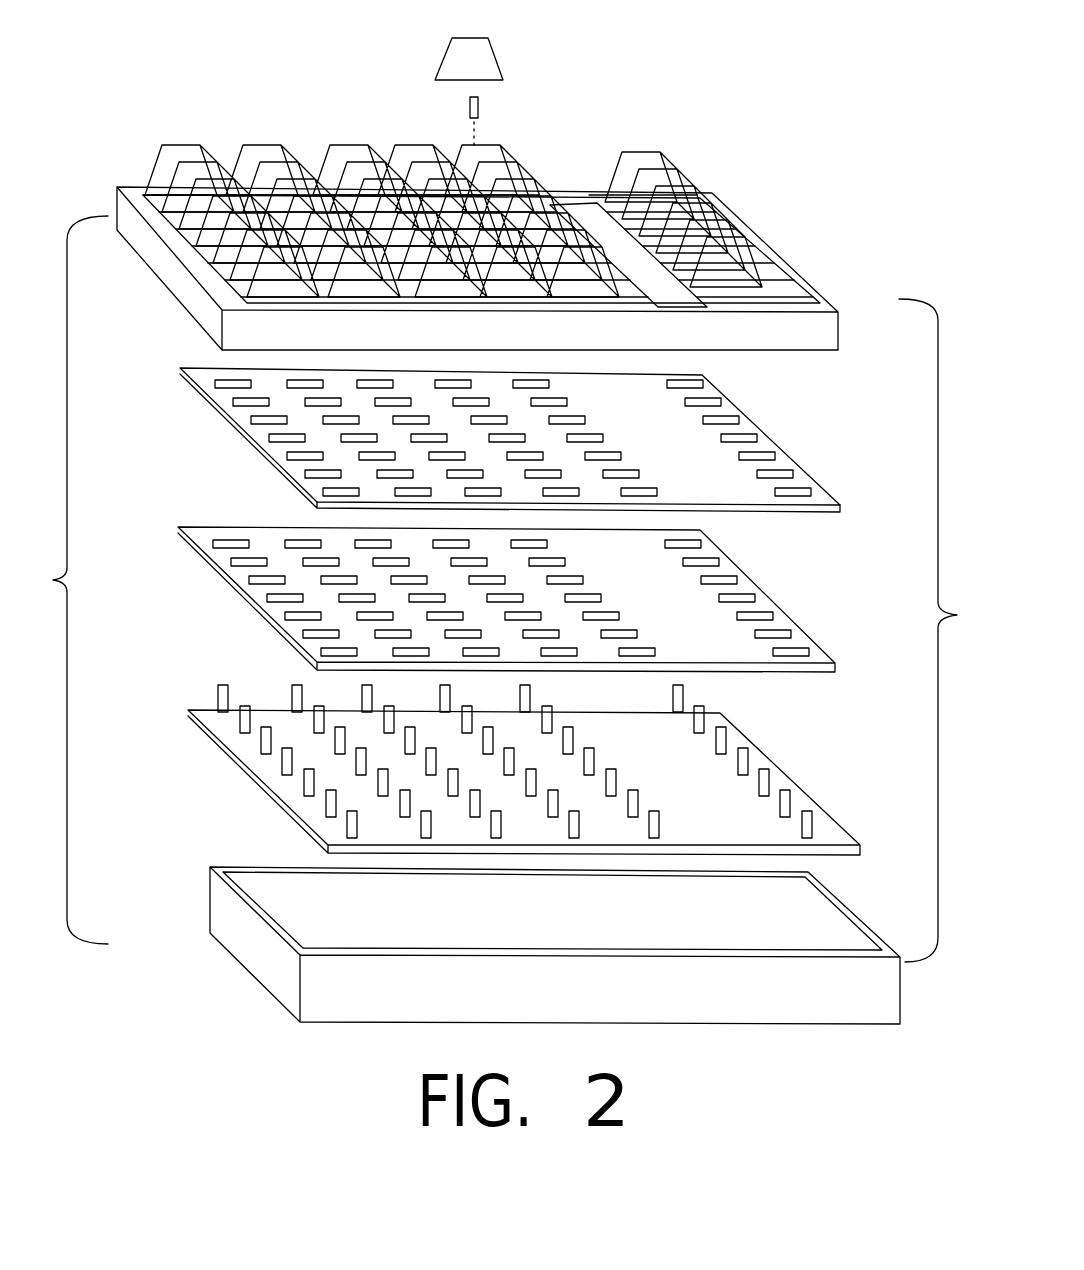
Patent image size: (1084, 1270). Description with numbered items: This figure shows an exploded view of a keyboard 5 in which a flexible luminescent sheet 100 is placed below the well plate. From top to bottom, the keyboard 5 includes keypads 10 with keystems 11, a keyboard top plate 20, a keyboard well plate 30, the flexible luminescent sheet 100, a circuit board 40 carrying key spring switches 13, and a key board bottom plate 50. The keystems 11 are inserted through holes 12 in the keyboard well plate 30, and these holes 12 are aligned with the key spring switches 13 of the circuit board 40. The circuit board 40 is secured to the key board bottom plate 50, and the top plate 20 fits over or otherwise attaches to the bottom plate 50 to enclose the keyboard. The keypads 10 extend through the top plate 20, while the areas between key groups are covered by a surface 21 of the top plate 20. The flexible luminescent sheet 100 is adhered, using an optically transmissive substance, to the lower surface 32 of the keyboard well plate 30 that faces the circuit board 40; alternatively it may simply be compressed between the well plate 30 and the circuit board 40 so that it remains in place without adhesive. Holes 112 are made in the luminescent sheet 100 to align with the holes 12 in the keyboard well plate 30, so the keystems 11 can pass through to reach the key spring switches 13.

The keyboard 5 is at (696, 88).
The keypads 10 is at (498, 55).
The keystems 11 is at (480, 108).
The holes 12 is at (793, 465).
The key spring switches 13 is at (224, 685).
The keyboard top plate 20 is at (767, 245).
The surface 21 is at (580, 212).
The keyboard well plate 30 is at (536, 467).
The lower surface 32 is at (808, 515).
The circuit board 40 is at (514, 740).
The key board bottom plate 50 is at (818, 918).
The flexible luminescent sheet 100 is at (544, 599).
The holes 112 is at (795, 650).